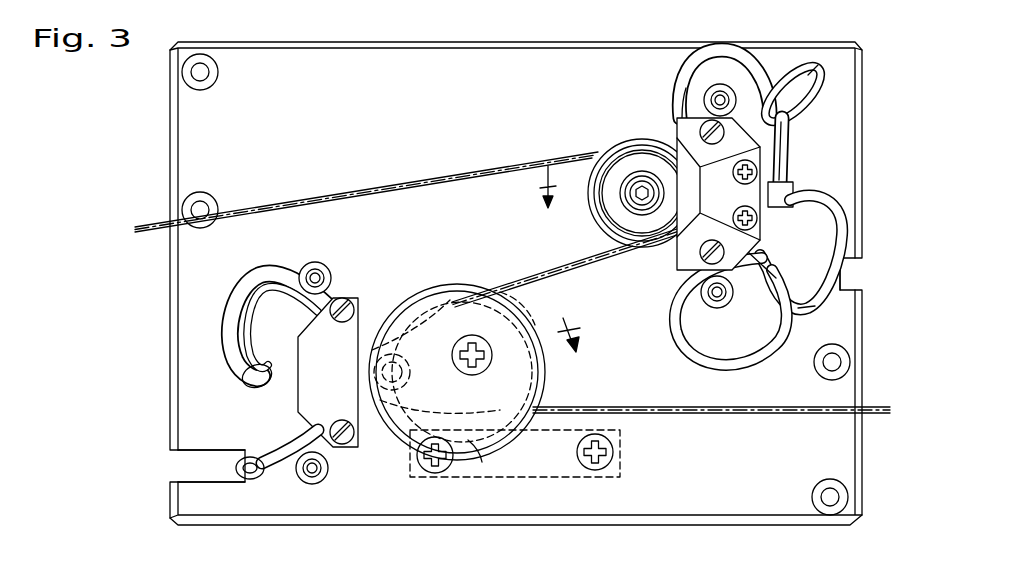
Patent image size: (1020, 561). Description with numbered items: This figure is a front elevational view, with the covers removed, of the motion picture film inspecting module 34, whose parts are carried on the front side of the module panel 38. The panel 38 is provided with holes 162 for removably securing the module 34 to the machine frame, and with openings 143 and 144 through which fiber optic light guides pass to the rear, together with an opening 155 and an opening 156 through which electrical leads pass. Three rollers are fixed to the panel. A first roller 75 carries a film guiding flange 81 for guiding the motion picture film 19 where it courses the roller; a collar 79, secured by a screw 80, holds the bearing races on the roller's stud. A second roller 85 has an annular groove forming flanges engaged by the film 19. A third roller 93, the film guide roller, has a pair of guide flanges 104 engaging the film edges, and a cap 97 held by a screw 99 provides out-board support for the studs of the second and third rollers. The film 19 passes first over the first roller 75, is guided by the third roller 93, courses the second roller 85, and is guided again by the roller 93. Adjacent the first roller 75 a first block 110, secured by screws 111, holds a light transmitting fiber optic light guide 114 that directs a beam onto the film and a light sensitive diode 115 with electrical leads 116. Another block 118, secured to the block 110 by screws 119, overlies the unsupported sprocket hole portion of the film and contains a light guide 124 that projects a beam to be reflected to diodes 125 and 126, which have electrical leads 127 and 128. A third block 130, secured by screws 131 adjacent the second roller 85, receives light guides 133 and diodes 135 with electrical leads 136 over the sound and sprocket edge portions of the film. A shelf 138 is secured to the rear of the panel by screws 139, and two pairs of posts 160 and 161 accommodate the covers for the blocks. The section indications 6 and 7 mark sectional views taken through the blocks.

The module panel 38 is at (190, 137).
The motion picture film inspecting module 34 is at (160, 272).
The opening 144 is at (190, 458).
The opening 143 is at (838, 272).
The holes 162 is at (196, 72).
The motion picture film 19 is at (412, 168).
The first roller 75 is at (612, 160).
The film guiding flange 81 is at (590, 165).
The collar 79 is at (620, 224).
The screw 80 is at (632, 196).
The section line 7- 7 is at (630, 184).
The third roller 93 is at (528, 396).
The second roller 85 is at (385, 335).
The guide flanges 104 is at (527, 303).
The screw 99 is at (468, 340).
The cap 97 is at (478, 448).
The section line 6- 6 is at (445, 350).
The shelf 138 is at (540, 480).
The screws 139 is at (433, 476).
The electrical leads 136 is at (240, 284).
The light sensitive electronic semiconductor diode 135 is at (305, 308).
The opening 156 is at (250, 378).
The third block 130 is at (300, 402).
The screws 131 is at (348, 302).
The light transmitting fiber optic light guide 133 is at (296, 448).
The posts 161 is at (320, 270).
The electrical leads 116 is at (742, 62).
The light sensitive electronic semiconductor diode 115 is at (690, 98).
The opening 155 is at (790, 90).
The electrical leads 128 is at (815, 78).
The light sensitive electronic semiconductor diode 126 is at (790, 128).
The block 118 is at (792, 188).
The light transmitting fiber optic light guide 124 is at (828, 205).
The electrical leads 127 is at (825, 305).
The light transmitting fiber optic light guide 114 is at (707, 336).
The light sensitive electronic semiconductor diode 125 is at (762, 268).
The first block 110 is at (690, 248).
The screws 111 is at (700, 128).
The screws 119 is at (758, 172).
The posts 160 is at (720, 94).